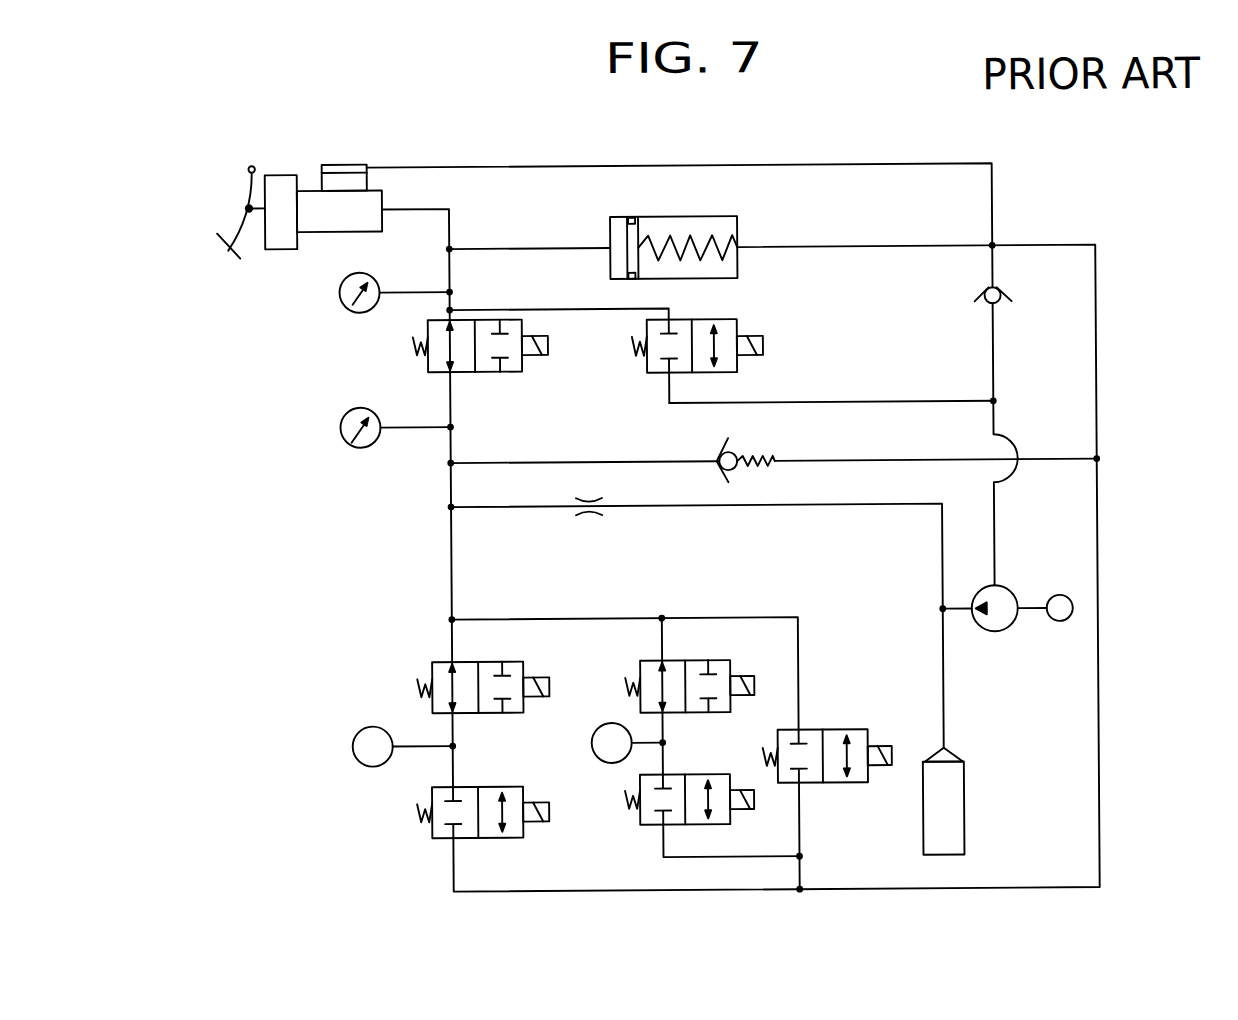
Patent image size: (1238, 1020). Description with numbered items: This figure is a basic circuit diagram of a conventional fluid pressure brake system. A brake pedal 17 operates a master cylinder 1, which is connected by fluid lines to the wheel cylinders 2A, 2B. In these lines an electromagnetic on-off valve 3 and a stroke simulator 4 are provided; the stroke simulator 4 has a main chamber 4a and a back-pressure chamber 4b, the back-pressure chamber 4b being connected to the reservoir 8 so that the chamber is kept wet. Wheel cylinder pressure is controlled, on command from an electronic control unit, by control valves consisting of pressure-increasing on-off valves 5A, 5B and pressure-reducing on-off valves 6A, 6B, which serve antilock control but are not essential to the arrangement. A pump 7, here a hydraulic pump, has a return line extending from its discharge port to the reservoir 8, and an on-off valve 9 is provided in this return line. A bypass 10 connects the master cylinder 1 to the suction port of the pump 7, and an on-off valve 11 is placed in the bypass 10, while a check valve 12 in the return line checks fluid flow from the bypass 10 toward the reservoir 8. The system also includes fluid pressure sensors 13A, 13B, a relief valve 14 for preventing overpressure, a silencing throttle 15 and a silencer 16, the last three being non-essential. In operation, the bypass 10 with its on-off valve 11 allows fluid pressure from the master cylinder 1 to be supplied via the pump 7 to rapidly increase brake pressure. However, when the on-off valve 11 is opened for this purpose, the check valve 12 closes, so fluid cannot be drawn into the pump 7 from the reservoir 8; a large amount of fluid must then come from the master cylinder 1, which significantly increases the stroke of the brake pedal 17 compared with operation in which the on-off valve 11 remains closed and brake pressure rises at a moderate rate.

The master cylinder 1 is at (325, 220).
The brake pedal 17 is at (242, 223).
The reservoir 8 is at (355, 163).
The fluid pressure sensor 13A is at (356, 311).
The fluid pressure sensor 13B is at (357, 446).
The electromagnetic on-off valve 3 is at (486, 371).
The stroke simulator 4 is at (690, 227).
The main chamber 4a is at (612, 226).
The back-pressure chamber 4b is at (729, 225).
The on-off valve 11 is at (729, 319).
The bypass 10 is at (819, 401).
The check valve 12 is at (1004, 287).
The relief valve 14 is at (738, 453).
The silencing throttle 15 is at (587, 516).
The pump 7 is at (1007, 633).
The silencer 16 is at (958, 804).
The pressure-increasing on-off valve 5A is at (435, 659).
The pressure-increasing on-off valve 5B is at (642, 659).
The pressure-reducing on-off valve 6A is at (430, 836).
The pressure-reducing on-off valve 6B is at (640, 824).
The wheel cylinder 2A is at (365, 762).
The wheel cylinder 2B is at (598, 758).
The on-off valve 9 is at (829, 784).